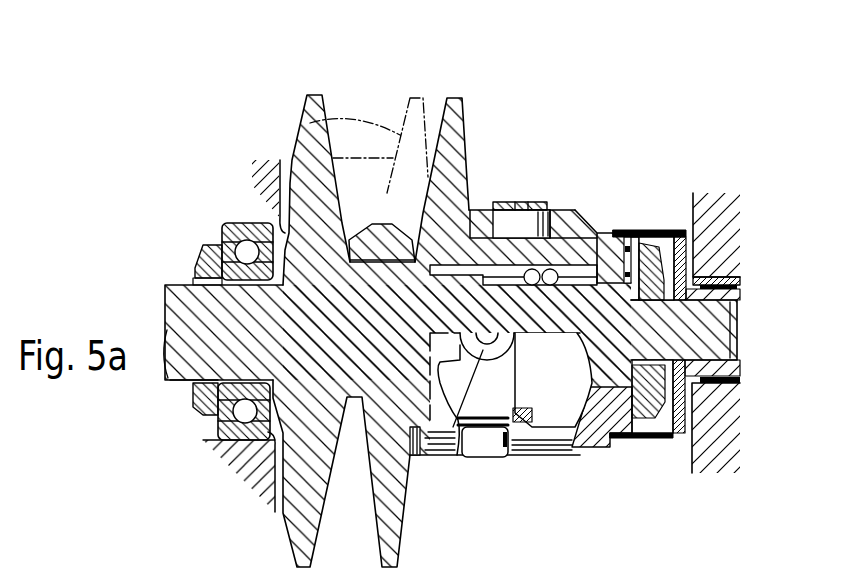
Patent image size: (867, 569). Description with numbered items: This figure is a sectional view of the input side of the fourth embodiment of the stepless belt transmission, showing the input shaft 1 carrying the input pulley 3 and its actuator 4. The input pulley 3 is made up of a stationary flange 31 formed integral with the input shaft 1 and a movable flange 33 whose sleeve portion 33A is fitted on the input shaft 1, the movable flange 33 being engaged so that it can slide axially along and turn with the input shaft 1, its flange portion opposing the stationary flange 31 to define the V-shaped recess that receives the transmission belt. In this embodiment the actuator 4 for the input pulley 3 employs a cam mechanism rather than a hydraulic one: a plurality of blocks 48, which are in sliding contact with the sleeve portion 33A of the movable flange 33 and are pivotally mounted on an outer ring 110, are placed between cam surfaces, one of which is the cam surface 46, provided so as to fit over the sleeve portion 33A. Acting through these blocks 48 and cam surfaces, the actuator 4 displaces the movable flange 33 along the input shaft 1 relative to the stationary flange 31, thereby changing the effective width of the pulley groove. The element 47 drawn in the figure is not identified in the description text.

The input shaft 1 is at (133, 257).
The input pulley 3 is at (450, 98).
The stationary flange 31 is at (322, 95).
The movable flange 33 is at (467, 137).
The sleeve portion 33A is at (548, 248).
The actuator 4 is at (580, 203).
The outer ring 110 is at (598, 214).
The cam surface 46 is at (453, 427).
The tapered member 47 is at (527, 433).
The block 48 is at (512, 212).